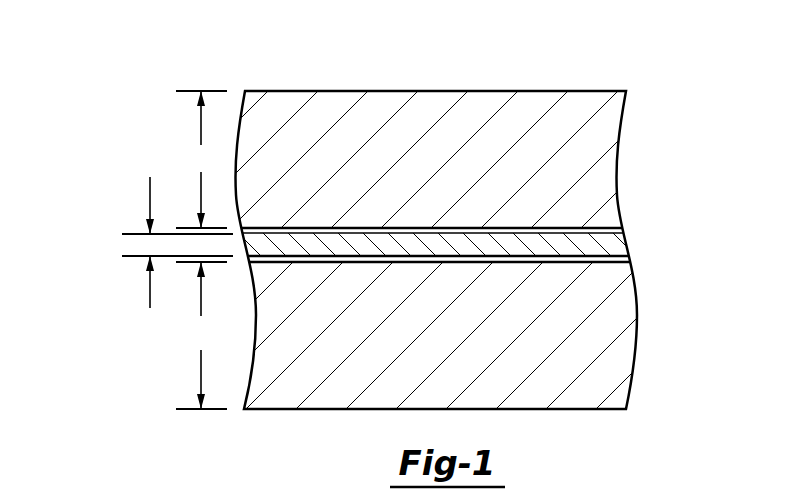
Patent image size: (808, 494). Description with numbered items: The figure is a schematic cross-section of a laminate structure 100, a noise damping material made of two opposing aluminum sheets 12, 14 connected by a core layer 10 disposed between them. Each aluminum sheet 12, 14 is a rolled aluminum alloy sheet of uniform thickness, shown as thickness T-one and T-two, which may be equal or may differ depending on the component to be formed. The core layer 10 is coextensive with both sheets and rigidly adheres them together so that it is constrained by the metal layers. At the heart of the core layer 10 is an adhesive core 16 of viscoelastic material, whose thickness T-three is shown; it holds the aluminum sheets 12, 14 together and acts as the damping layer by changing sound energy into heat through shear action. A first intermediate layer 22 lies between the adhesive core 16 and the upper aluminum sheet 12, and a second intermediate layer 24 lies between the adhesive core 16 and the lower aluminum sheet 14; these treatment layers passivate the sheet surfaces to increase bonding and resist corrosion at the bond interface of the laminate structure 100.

The core layer 10 is at (720, 223).
The aluminum sheet 12 is at (617, 171).
The aluminum sheet 14 is at (637, 342).
The adhesive core 16 is at (626, 246).
The first intermediate layer 22 is at (623, 231).
The second intermediate layer 24 is at (628, 259).
The laminate structure 100 is at (140, 88).